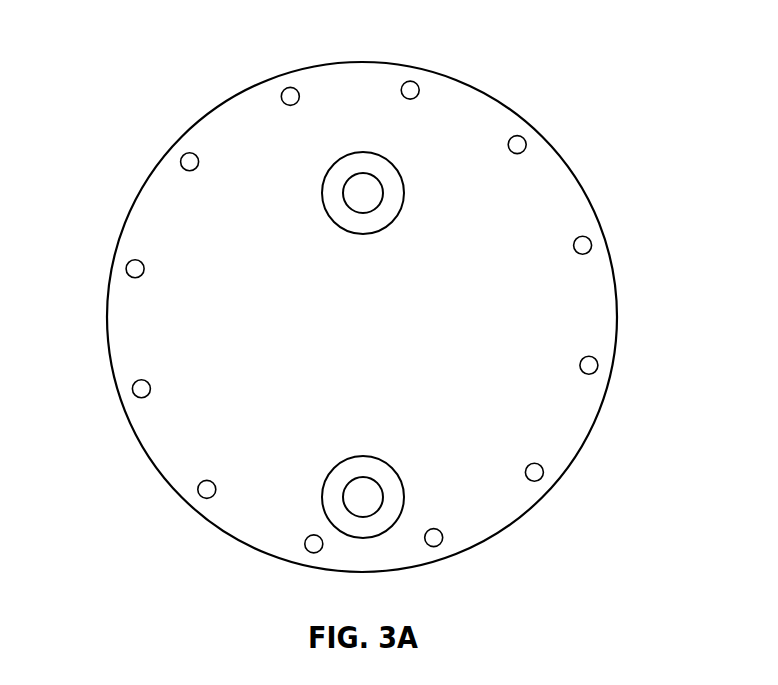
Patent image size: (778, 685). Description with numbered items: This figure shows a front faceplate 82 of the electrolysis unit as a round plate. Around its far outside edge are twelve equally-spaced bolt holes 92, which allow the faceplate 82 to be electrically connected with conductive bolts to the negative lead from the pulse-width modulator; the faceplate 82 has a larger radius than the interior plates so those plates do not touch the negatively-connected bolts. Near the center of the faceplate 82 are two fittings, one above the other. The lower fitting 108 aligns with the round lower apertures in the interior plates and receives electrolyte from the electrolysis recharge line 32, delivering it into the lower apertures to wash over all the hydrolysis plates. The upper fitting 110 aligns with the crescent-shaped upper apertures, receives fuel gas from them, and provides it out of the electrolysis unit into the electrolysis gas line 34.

The front faceplate 82 is at (132, 105).
The bolt holes 92 is at (410, 88).
The upper fitting 110 is at (405, 192).
The electrolysis gas line 34 is at (360, 195).
The lower fitting 108 is at (362, 457).
The electrolysis recharge line 32 is at (362, 497).